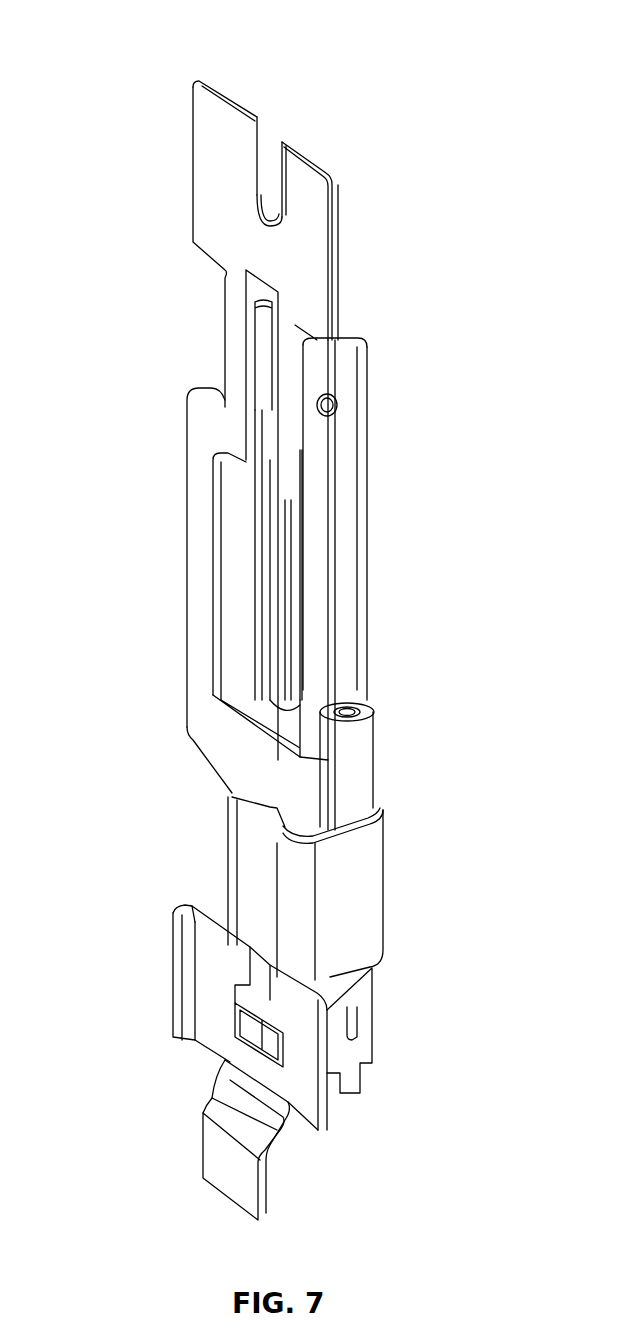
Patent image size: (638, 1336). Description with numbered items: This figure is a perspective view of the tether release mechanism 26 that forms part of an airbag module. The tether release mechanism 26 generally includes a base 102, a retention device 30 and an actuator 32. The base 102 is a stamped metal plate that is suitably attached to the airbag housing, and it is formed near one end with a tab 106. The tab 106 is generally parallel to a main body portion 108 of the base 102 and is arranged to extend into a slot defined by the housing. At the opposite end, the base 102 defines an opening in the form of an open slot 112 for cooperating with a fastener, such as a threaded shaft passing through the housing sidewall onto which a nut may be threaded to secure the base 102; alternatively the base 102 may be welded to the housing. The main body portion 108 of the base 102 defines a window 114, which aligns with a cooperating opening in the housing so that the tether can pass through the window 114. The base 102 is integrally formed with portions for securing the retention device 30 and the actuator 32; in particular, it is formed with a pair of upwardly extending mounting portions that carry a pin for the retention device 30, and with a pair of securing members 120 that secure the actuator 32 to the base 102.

The tether release mechanism 26 is at (110, 48).
The base 102 is at (193, 178).
The open slot 112 is at (257, 150).
The retention device 30 is at (367, 472).
The window 114 is at (237, 532).
The main body portion 108 is at (198, 722).
The securing members 120 is at (383, 873).
The actuator 32 is at (375, 1028).
The tab 106 is at (217, 1160).